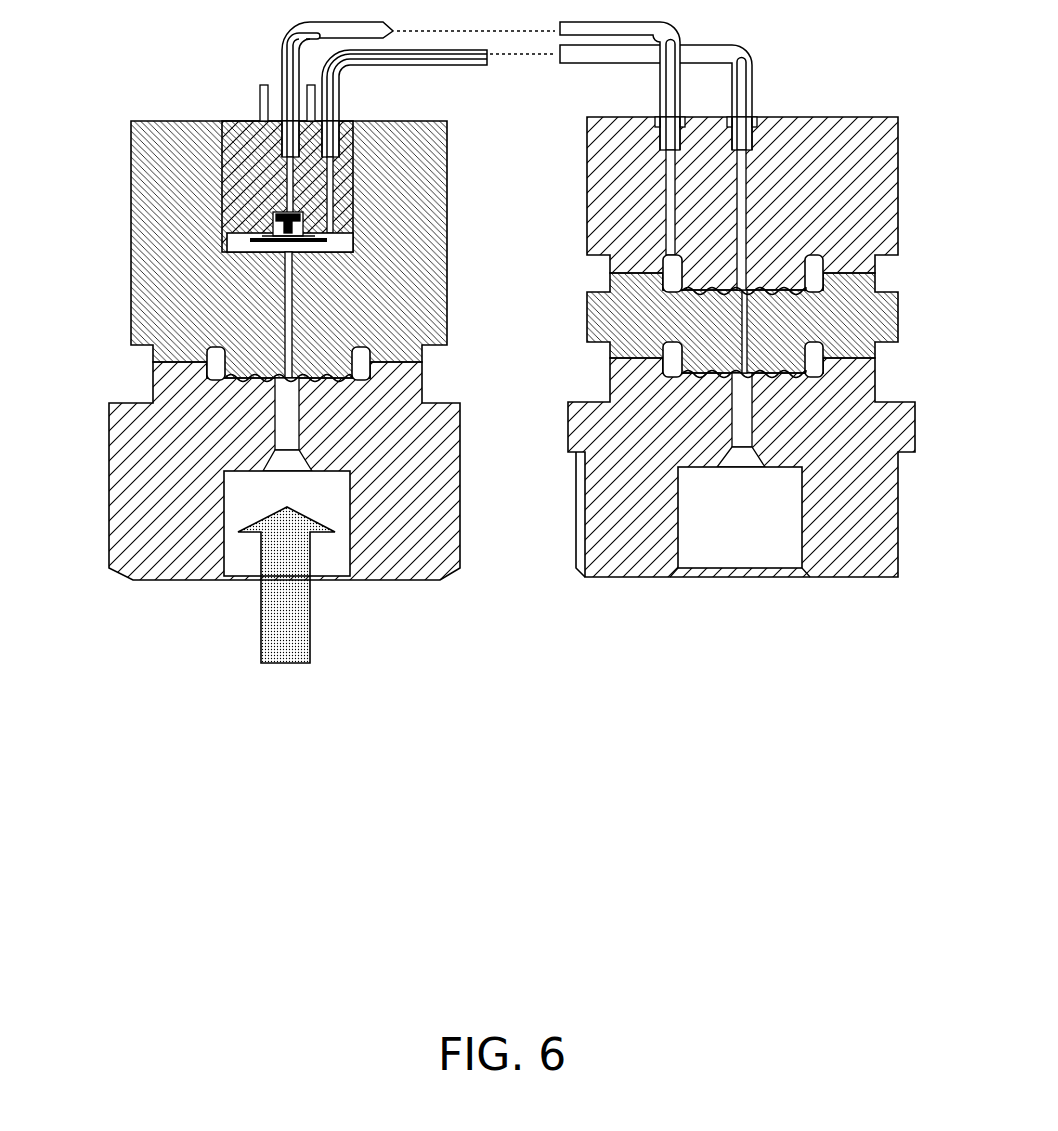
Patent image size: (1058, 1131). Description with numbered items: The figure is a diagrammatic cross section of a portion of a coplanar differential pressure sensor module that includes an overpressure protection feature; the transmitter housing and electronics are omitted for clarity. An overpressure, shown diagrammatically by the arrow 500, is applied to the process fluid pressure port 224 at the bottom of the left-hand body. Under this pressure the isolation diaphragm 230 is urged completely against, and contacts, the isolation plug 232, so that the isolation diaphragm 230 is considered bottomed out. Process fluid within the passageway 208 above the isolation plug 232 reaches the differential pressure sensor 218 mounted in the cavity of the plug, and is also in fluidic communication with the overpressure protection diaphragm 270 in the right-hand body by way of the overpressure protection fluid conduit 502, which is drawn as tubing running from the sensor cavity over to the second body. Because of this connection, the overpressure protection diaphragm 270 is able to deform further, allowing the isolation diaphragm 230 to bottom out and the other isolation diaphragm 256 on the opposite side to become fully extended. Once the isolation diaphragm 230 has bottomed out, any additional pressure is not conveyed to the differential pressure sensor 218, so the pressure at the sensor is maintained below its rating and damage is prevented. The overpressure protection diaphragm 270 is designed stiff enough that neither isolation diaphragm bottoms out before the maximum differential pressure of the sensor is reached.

The differential pressure sensor 218 is at (265, 238).
The overpressure protection fluid conduit 502 is at (332, 120).
The passageway 208 is at (300, 295).
The isolation diaphragm 230 is at (258, 375).
The isolation plug 232 is at (403, 327).
The process fluid pressure port 224 is at (252, 558).
The overpressure 500 is at (310, 615).
The overpressure protection diaphragm 270 is at (755, 288).
The isolation diaphragm 256 is at (748, 376).